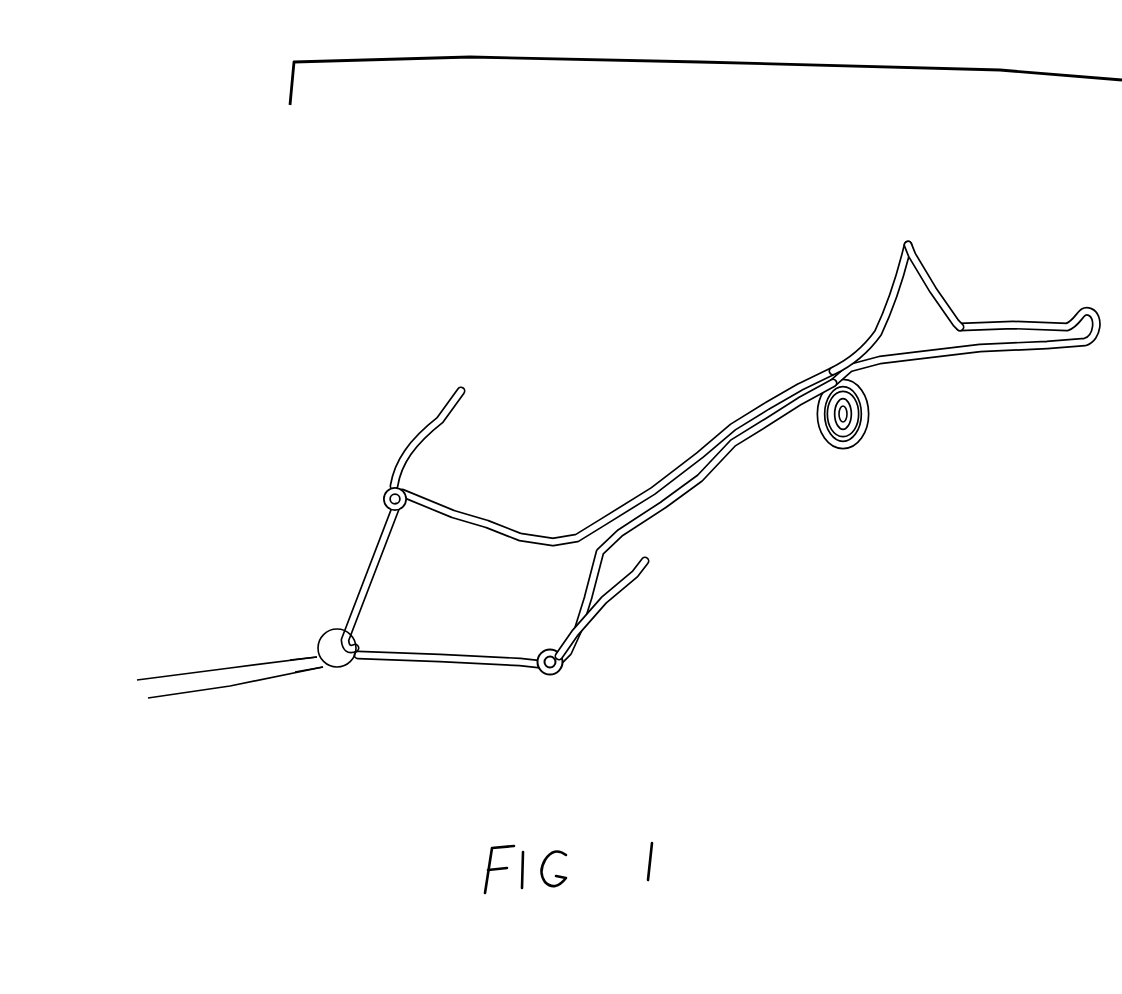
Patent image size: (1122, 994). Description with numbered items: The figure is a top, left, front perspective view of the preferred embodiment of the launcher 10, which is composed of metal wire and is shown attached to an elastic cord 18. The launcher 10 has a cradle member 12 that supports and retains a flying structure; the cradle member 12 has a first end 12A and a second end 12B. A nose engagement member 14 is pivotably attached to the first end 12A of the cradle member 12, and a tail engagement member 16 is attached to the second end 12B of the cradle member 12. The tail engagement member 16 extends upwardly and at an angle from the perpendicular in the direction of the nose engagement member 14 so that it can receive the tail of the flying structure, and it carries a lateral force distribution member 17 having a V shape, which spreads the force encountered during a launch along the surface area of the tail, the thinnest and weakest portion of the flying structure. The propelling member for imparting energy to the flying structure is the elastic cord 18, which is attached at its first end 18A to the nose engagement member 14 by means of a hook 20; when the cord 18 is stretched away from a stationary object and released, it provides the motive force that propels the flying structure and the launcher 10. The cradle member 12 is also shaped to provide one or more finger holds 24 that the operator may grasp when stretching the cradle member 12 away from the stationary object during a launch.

The launcher 10 is at (706, 59).
The cradle member 12 is at (532, 525).
The first end of the cradle member 12A is at (383, 492).
The second end of the cradle member 12B is at (892, 292).
The nose engagement member 14 is at (425, 420).
The tail engagement member 16 is at (1079, 310).
The lateral force distribution member 17 is at (955, 302).
The elastic cord 18 is at (163, 677).
The first end of the elastic cord 18A is at (290, 657).
The hook 20 is at (340, 668).
The finger hold 24 is at (845, 457).